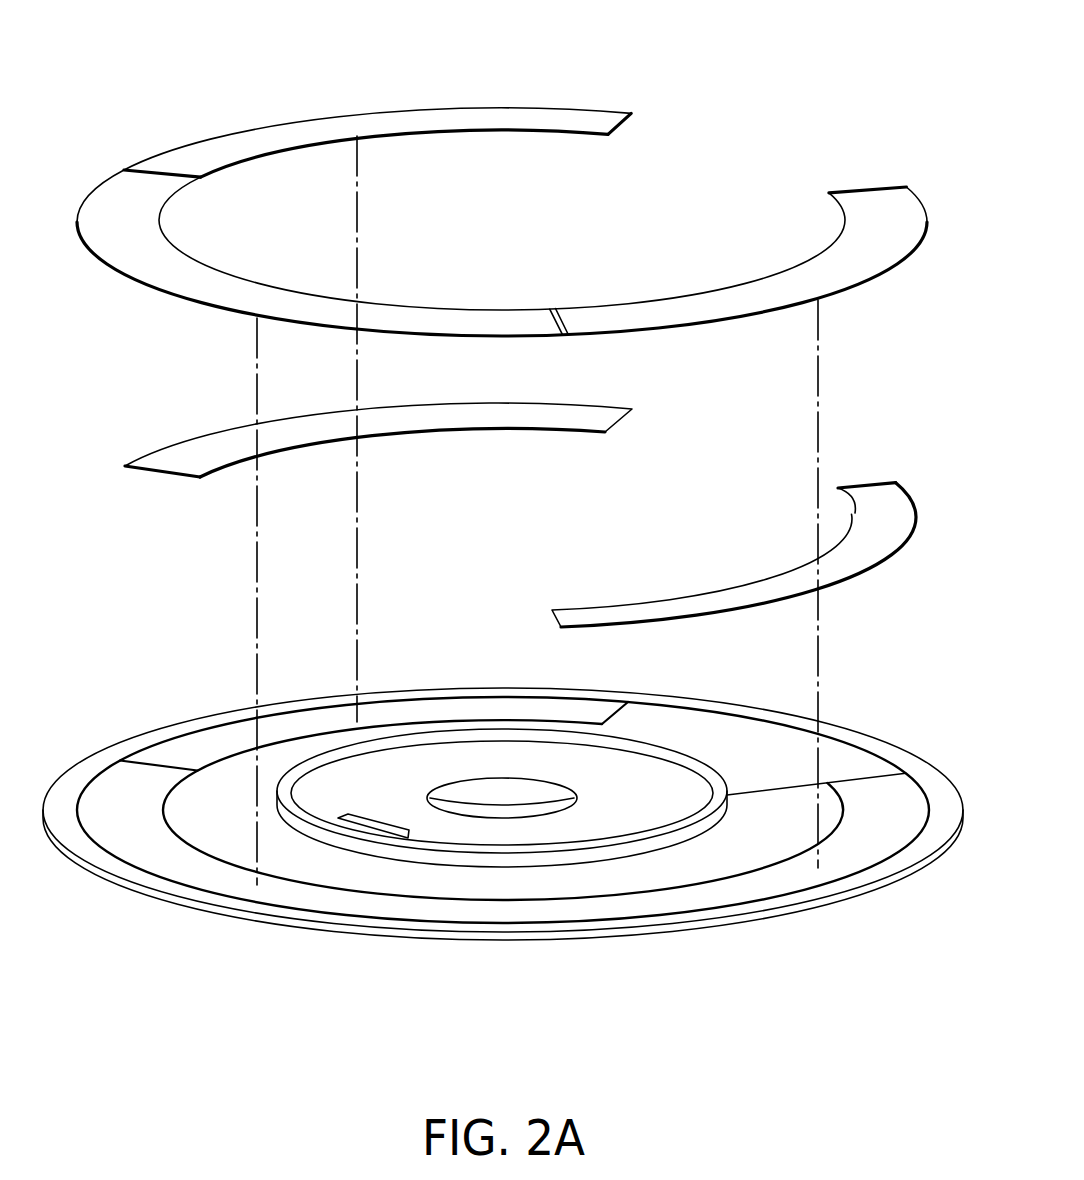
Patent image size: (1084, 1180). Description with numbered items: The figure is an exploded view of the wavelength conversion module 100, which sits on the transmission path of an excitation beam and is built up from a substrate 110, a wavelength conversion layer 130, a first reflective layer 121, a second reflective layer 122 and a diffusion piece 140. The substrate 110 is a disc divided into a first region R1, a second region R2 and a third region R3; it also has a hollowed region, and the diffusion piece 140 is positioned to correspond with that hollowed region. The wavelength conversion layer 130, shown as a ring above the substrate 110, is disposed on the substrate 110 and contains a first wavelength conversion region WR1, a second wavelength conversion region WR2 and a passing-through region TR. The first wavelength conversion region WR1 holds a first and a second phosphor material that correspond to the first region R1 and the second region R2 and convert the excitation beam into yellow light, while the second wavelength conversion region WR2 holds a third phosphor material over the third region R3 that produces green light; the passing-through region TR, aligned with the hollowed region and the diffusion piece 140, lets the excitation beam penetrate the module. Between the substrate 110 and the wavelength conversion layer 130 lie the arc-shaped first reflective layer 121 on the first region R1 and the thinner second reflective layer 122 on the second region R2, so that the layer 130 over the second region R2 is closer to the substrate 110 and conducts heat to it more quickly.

The wavelength conversion module 100 is at (503, 513).
The substrate 110 is at (503, 790).
The first reflective layer 121 is at (605, 418).
The second reflective layer 122 is at (213, 720).
The wavelength conversion layer 130 is at (502, 174).
The diffusion piece 140 is at (853, 762).
The first region R1 is at (733, 896).
The second region R2 is at (190, 874).
The third region R3 is at (454, 698).
The first wavelength conversion region WR1 is at (596, 289).
The second wavelength conversion region WR2 is at (459, 90).
The passing-through region TR is at (720, 128).